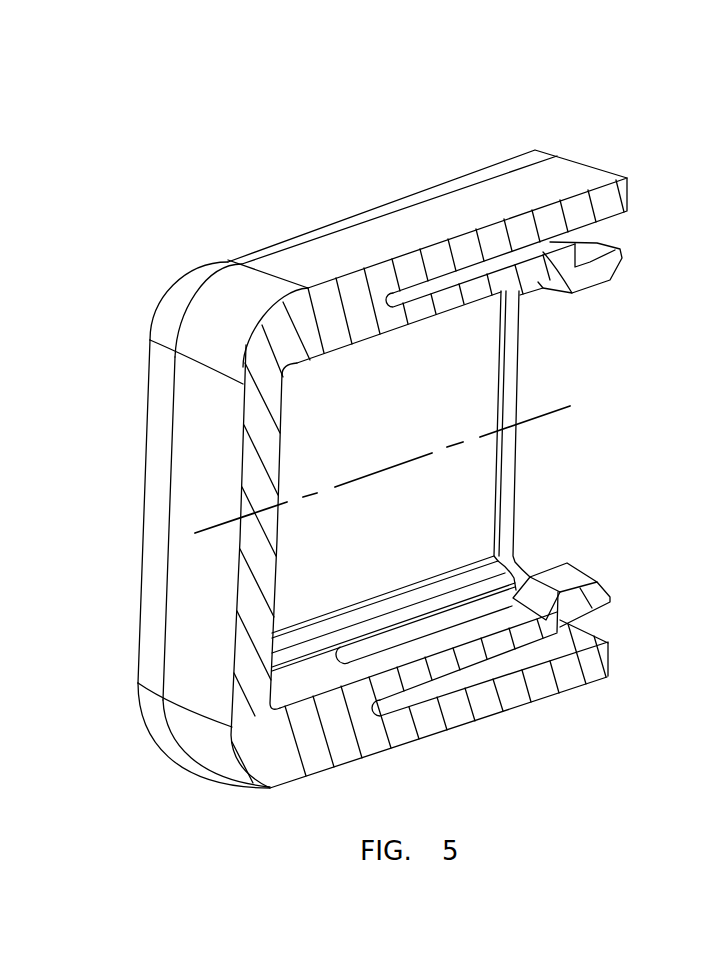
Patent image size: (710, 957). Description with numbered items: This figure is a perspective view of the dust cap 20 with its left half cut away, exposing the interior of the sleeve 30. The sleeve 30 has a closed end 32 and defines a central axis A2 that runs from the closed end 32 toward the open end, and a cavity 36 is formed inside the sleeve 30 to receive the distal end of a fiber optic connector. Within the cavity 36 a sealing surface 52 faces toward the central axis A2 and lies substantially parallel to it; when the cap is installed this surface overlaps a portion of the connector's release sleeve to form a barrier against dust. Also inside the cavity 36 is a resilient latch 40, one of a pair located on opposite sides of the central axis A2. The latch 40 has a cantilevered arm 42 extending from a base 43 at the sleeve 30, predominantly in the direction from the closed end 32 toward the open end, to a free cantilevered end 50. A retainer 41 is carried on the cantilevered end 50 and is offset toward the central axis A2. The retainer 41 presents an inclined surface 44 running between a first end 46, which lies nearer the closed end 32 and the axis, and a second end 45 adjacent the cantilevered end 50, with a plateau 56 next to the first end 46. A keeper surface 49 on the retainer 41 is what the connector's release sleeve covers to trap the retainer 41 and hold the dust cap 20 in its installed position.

The dust cap 20 is at (385, 152).
The sleeve 30 is at (312, 252).
The closed end 32 is at (203, 458).
The cavity 36 is at (292, 572).
The resilient latch 40 is at (597, 280).
The retainer 41 is at (590, 602).
The cantilevered arm 42 is at (445, 673).
The base 43 is at (365, 700).
The inclined surface 44 is at (600, 588).
The second end 45 is at (608, 592).
The first end 46 is at (573, 572).
The keeper surface 49 is at (600, 252).
The cantilevered end 50 is at (545, 635).
The sealing surface 52 is at (510, 342).
The plateau 56 is at (552, 580).
The central axis A2 is at (548, 398).